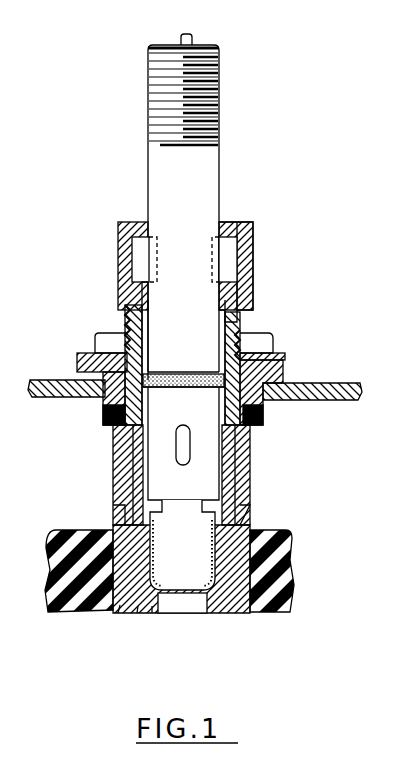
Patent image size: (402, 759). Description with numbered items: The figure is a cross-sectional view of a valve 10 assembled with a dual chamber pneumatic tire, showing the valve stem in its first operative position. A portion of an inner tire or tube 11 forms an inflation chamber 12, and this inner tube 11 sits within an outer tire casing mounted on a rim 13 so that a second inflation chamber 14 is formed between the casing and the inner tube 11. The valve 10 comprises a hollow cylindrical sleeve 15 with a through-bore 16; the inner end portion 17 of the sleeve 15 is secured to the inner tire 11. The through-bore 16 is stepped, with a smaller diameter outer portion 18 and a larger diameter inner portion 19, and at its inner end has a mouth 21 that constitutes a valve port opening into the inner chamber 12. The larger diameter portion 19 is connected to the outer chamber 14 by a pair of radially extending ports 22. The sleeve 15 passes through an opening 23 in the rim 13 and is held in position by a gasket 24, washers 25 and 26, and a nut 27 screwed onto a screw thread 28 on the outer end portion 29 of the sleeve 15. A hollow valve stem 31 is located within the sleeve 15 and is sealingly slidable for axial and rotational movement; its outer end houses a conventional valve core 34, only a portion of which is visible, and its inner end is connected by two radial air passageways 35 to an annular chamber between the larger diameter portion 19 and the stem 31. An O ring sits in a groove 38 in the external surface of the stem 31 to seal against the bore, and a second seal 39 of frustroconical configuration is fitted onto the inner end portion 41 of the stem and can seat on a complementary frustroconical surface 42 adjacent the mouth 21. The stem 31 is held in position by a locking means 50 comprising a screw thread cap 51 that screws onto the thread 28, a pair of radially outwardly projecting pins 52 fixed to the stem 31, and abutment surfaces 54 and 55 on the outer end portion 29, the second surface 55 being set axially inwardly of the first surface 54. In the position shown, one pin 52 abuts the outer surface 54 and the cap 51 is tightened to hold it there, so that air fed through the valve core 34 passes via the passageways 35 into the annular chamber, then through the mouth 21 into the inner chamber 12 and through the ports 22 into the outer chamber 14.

The valve 10 is at (118, 316).
The inner tire or tube 11 is at (292, 552).
The inflation chamber 12 is at (197, 655).
The rim 13 is at (32, 398).
The inflation chamber 14 is at (52, 470).
The hollow cylindrical sleeve 15 is at (243, 492).
The through-bore 16 is at (252, 468).
The inner end portion 17 is at (137, 614).
The smaller diameter outer portion 18 is at (116, 436).
The larger diameter inner portion 19 is at (116, 478).
The mouth 21 is at (205, 614).
The radially extending ports 22 is at (118, 510).
The opening 23 is at (290, 392).
The gasket 24 is at (82, 372).
The washer 25 is at (268, 410).
The washer 26 is at (286, 360).
The nut 27 is at (108, 345).
The screw thread 28 is at (245, 331).
The outer end portion 29 is at (137, 320).
The hollow valve stem 31 is at (172, 178).
The valve core 34 is at (190, 36).
The radial air passageways 35 is at (186, 445).
The groove 38 is at (174, 374).
The second seal 39 is at (216, 565).
The inner end portion 41 is at (120, 612).
The frustroconical surface 42 is at (152, 614).
The locking means 50 is at (116, 228).
The screw thread cap 51 is at (243, 278).
The radially outwardly projecting pins 52 is at (143, 262).
The abutment surface 54 is at (226, 230).
The abutment surface 55 is at (118, 264).